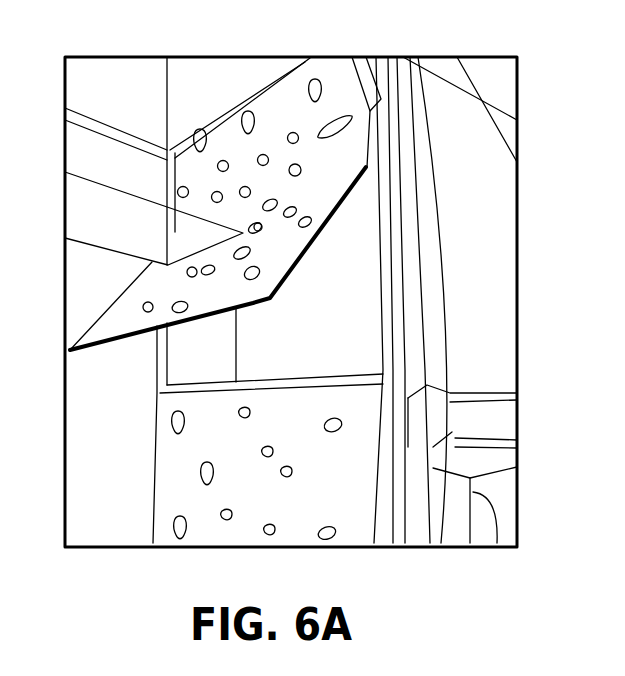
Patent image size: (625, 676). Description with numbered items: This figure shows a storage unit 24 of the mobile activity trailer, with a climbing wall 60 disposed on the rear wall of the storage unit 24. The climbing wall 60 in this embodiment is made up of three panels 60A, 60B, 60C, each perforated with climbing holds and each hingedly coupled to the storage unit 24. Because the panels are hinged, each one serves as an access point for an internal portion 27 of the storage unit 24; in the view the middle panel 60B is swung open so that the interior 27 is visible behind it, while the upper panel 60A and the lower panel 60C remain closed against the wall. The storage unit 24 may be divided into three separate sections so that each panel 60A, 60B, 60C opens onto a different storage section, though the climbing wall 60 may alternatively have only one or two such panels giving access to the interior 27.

The panel 60A is at (296, 107).
The panel 60B is at (100, 328).
The panel 60C is at (347, 416).
The climbing wall 60 is at (386, 499).
The storage unit 24 is at (436, 246).
The internal portion 27 is at (352, 253).